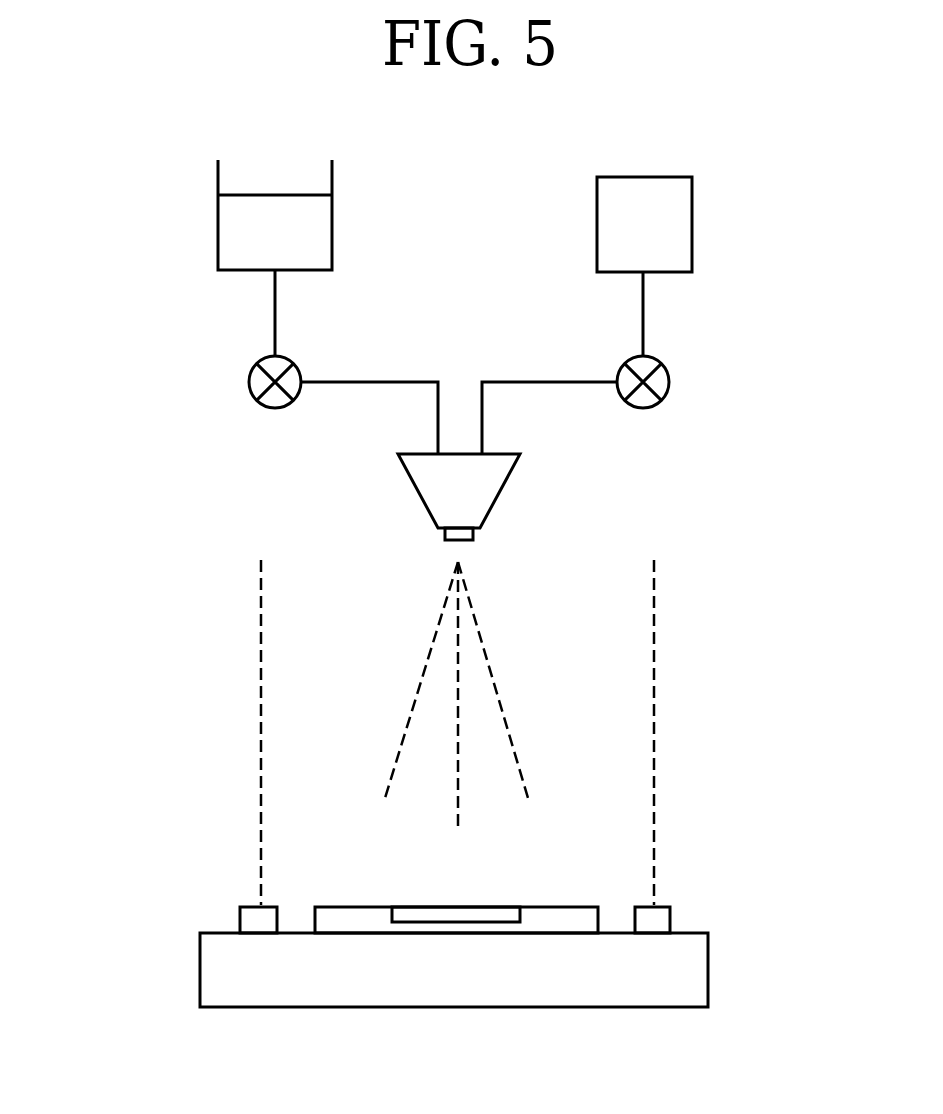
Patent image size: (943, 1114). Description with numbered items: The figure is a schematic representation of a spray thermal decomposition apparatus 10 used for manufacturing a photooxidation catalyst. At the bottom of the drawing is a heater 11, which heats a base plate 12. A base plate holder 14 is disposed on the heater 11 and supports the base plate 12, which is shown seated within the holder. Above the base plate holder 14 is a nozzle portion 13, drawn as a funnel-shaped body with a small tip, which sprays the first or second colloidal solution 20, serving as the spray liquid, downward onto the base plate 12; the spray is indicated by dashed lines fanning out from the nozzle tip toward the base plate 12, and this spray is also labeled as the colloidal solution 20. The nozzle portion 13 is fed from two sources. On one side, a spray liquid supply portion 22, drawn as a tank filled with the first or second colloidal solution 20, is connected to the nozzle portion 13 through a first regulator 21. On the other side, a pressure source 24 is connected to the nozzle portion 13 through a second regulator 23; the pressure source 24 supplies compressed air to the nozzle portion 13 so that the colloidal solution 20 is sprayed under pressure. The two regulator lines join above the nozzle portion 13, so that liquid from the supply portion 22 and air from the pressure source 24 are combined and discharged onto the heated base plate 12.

The spray thermal decomposition apparatus 10 is at (496, 1100).
The heater 11 is at (675, 977).
The base plate 12 is at (405, 912).
The nozzle portion 13 is at (500, 497).
The base plate holder 14 is at (558, 920).
The first or second colloidal solution 20 is at (258, 247).
The first regulator 21 is at (249, 383).
The spray liquid supply portion 22 is at (218, 208).
The second regulator 23 is at (661, 364).
The pressure source 24 is at (692, 230).